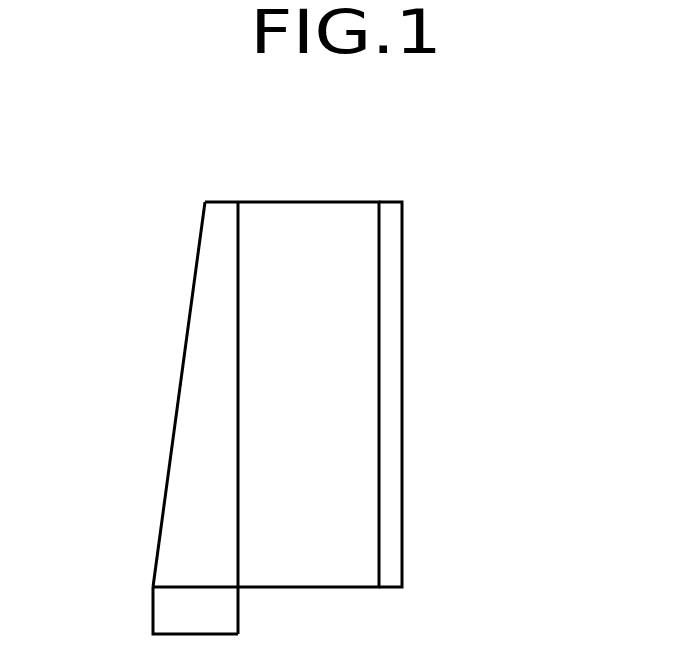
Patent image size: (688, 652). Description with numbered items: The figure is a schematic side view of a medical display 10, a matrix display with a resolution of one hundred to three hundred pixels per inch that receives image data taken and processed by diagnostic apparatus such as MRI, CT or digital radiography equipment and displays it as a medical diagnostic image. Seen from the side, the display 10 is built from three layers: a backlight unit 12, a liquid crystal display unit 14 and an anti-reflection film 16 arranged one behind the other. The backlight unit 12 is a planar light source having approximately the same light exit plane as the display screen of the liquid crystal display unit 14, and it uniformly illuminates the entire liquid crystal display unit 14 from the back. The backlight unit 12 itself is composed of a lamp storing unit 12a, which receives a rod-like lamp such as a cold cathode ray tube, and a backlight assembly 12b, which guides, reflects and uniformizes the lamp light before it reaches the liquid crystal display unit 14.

The medical display 10 is at (293, 363).
The backlight unit 12 is at (152, 418).
The lamp storing unit 12a is at (168, 613).
The backlight assembly 12b is at (168, 526).
The liquid crystal display unit 14 is at (348, 218).
The anti-reflection film 16 is at (396, 250).